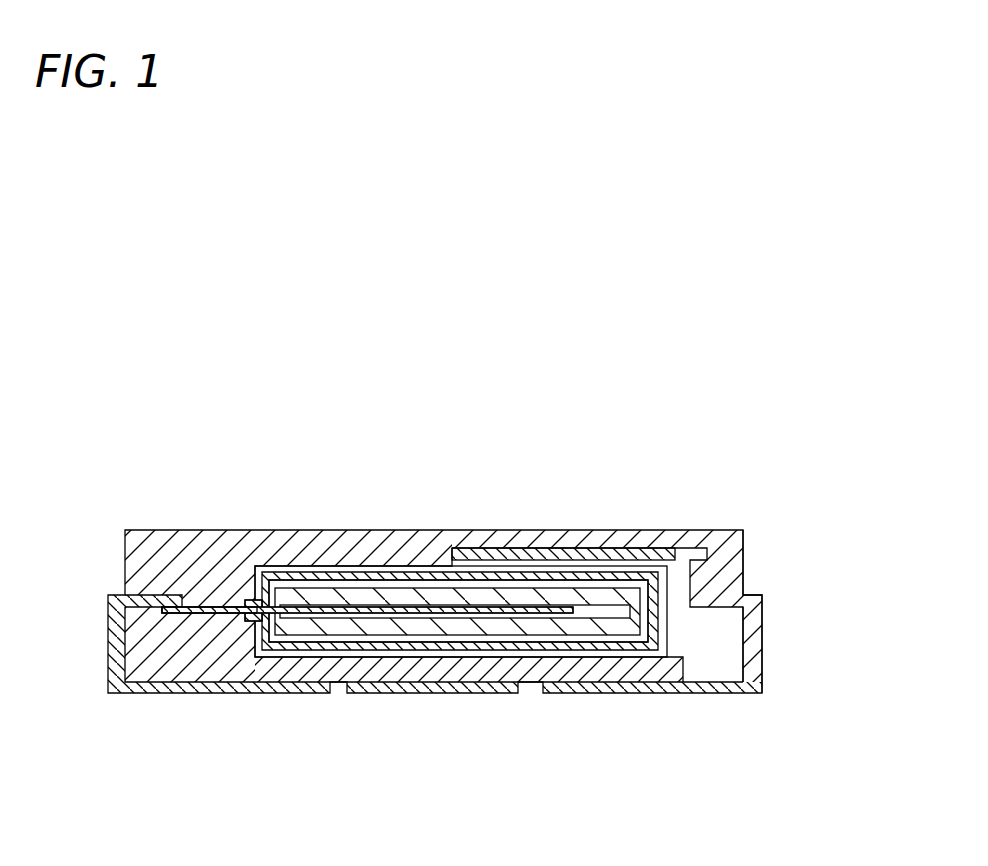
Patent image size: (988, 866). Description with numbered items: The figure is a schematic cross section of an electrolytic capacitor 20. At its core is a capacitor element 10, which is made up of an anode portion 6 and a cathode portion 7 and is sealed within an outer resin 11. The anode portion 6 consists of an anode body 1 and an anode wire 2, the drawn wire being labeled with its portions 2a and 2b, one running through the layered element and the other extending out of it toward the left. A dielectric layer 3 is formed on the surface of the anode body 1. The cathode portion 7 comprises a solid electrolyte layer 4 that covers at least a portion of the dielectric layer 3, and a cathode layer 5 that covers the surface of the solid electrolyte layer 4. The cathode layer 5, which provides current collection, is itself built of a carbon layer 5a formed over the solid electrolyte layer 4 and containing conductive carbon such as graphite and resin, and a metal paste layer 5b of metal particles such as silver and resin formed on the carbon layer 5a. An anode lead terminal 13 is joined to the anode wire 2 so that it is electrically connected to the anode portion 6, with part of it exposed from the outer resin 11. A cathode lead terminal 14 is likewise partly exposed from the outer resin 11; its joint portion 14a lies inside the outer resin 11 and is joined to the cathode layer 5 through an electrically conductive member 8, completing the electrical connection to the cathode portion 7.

The anode body 1 is at (442, 605).
The anode wire 2 is at (417, 598).
The internal electrode portion 2a is at (497, 612).
The lead-out electrode portion 2b is at (209, 614).
The dielectric layer 3 is at (373, 588).
The solid electrolyte layer 4 is at (340, 582).
The cathode layer 5 is at (312, 483).
The carbon layer 5a is at (301, 572).
The metal paste layer 5b is at (264, 566).
The anode portion 6 is at (448, 483).
The cathode portion 7 is at (355, 436).
The electrically conductive member 8 is at (512, 556).
The capacitor element 10 is at (450, 393).
The outer resin 11 is at (206, 540).
The anode lead terminal 13 is at (112, 658).
The cathode lead terminal 14 is at (752, 648).
The joint portion 14a is at (585, 553).
The electrolytic capacitor 20 is at (660, 467).